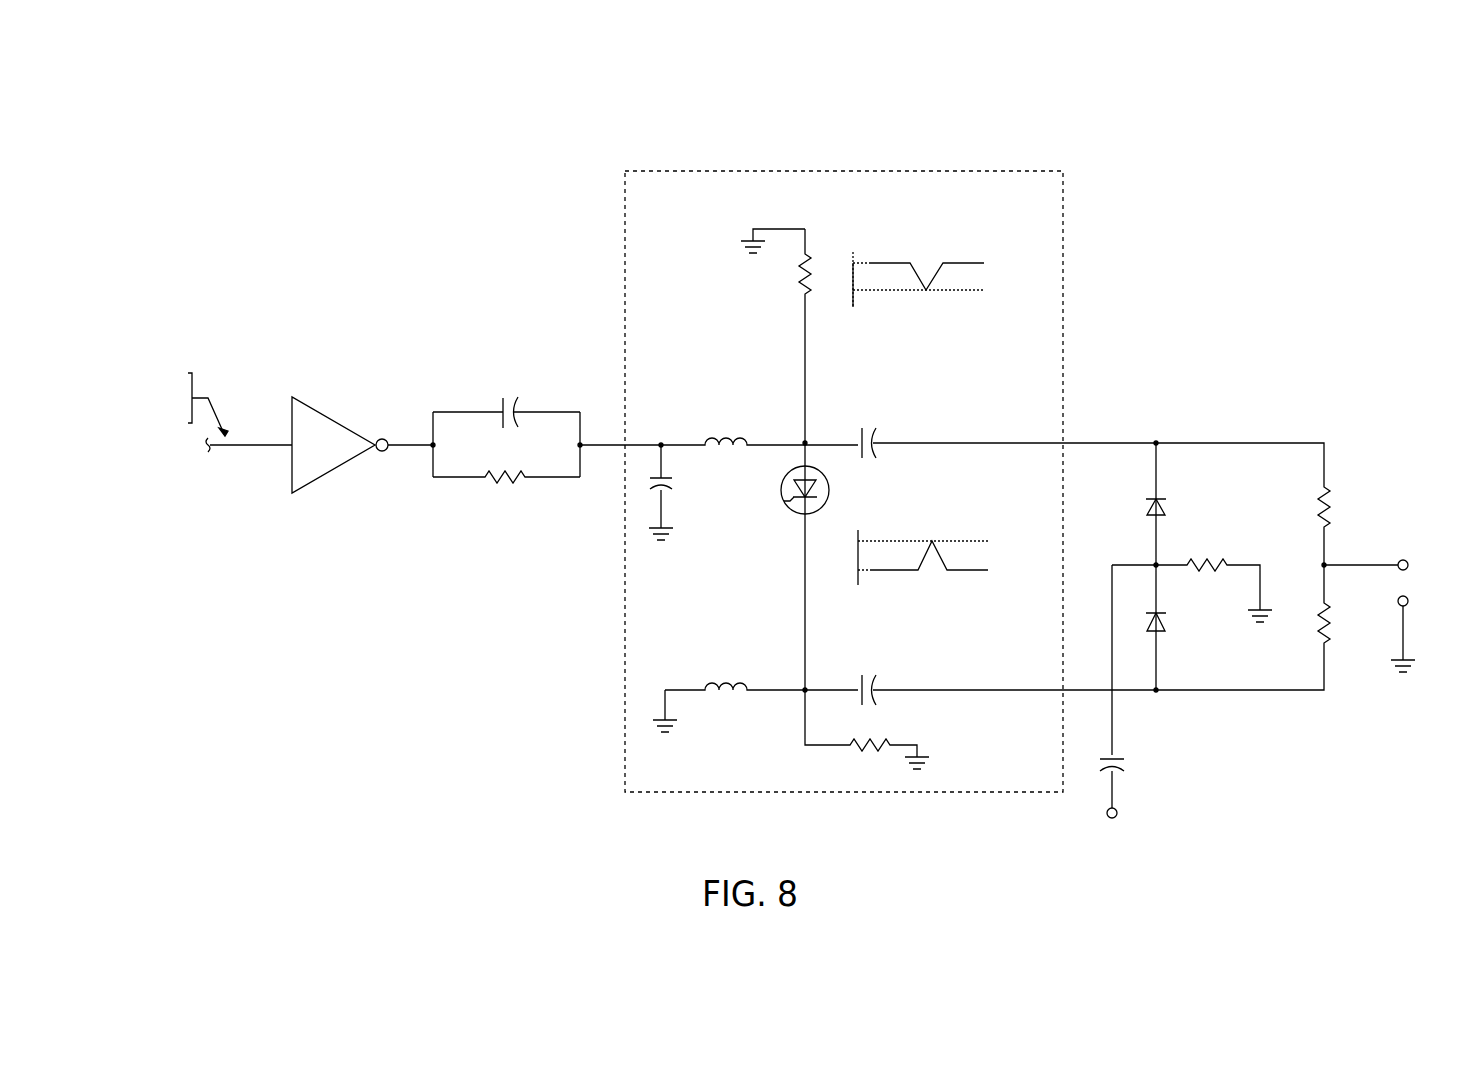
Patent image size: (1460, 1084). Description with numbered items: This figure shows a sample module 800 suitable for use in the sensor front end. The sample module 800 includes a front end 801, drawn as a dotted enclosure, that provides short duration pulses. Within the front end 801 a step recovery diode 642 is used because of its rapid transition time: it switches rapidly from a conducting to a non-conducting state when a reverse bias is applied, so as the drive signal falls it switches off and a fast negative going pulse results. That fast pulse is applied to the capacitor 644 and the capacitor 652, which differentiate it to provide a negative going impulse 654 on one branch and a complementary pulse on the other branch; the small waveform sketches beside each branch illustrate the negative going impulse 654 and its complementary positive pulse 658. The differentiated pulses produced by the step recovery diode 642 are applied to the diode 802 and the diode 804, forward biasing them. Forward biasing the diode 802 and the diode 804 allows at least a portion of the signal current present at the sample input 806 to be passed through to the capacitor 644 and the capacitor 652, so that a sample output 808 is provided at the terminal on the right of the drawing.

The sample module 800 is at (770, 510).
The front end 801 is at (637, 211).
The step recovery diode 642 is at (829, 492).
The capacitor 644 is at (877, 436).
The capacitor 652 is at (877, 681).
The negative going impulse 654 is at (937, 250).
The positive sample pulse waveform 658 is at (980, 557).
The diode 802 is at (1165, 508).
The diode 804 is at (1165, 624).
The sample input 806 is at (1118, 813).
The sample output 808 is at (1407, 560).